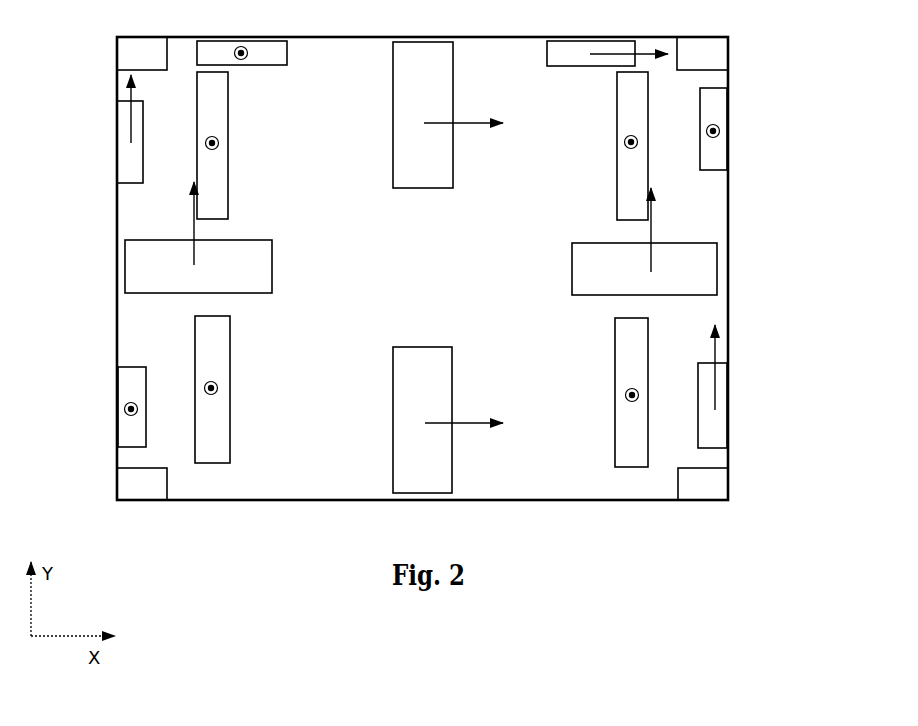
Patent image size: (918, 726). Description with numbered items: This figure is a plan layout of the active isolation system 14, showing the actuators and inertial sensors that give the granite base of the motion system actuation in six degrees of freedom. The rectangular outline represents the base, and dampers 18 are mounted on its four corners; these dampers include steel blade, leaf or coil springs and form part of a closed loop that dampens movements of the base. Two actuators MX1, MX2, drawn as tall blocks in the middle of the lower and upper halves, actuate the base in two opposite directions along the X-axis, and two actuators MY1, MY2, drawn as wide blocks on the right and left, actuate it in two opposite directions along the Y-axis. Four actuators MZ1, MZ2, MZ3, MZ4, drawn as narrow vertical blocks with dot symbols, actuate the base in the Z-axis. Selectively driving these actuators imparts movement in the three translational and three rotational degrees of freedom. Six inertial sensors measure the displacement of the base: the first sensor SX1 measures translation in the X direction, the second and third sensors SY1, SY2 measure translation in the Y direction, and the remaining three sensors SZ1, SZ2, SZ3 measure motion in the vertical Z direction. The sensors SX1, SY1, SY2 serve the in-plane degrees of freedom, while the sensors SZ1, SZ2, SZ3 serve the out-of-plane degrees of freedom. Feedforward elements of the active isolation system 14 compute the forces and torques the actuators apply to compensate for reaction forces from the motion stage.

The active isolation system 14 is at (802, 219).
The dampers 18 is at (137, 52).
The inertial sensor SZ2 is at (242, 73).
The actuator MZ3 is at (240, 145).
The inertial sensor SY2 is at (150, 129).
The actuator MY2 is at (198, 237).
The actuator MZ4 is at (238, 389).
The inertial sensor SZ3 is at (152, 407).
The actuator MX2 is at (448, 115).
The actuator MX1 is at (448, 420).
The inertial sensor SX1 is at (607, 70).
The actuator MZ2 is at (609, 146).
The inertial sensor SZ1 is at (692, 129).
The actuator MY1 is at (644, 241).
The actuator MZ1 is at (610, 392).
The inertial sensor SY1 is at (692, 386).